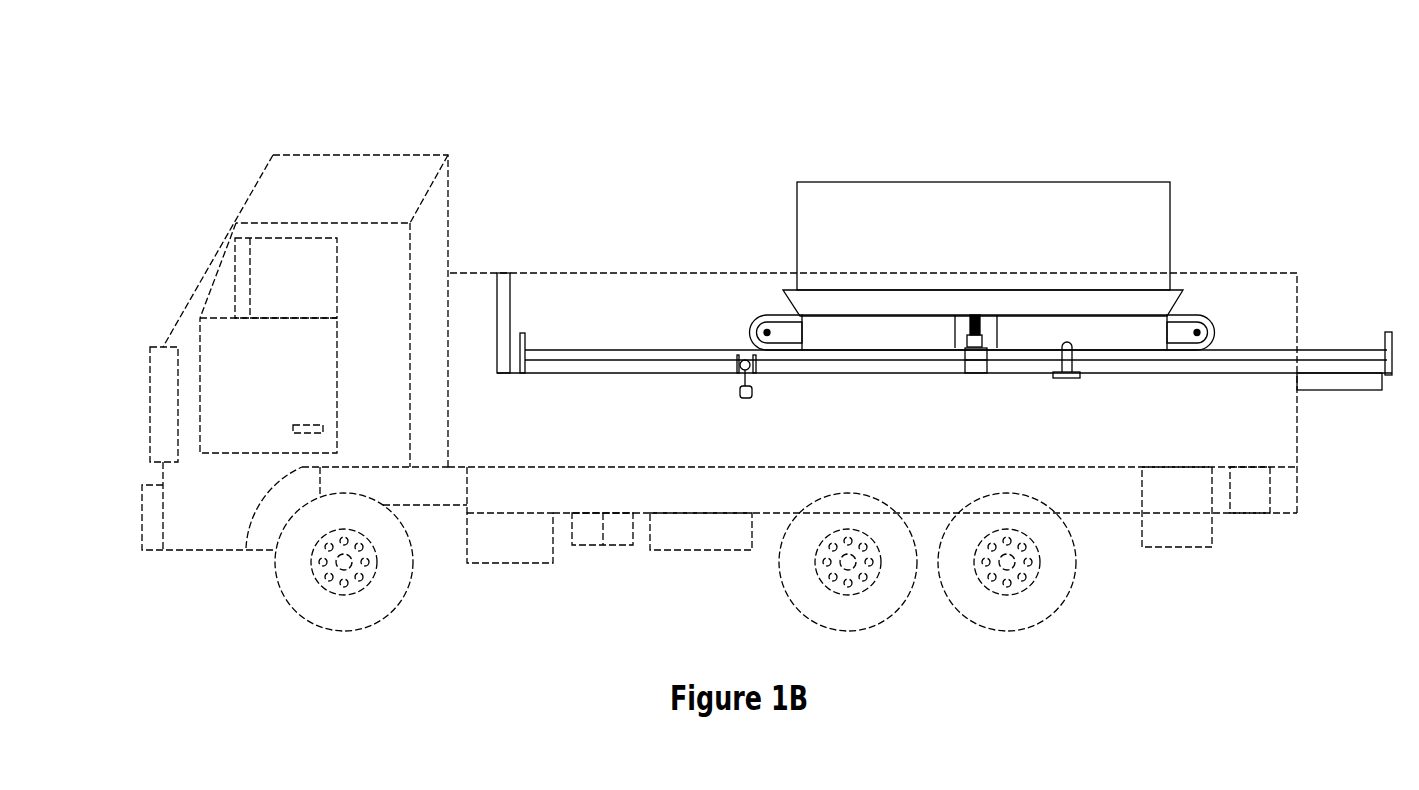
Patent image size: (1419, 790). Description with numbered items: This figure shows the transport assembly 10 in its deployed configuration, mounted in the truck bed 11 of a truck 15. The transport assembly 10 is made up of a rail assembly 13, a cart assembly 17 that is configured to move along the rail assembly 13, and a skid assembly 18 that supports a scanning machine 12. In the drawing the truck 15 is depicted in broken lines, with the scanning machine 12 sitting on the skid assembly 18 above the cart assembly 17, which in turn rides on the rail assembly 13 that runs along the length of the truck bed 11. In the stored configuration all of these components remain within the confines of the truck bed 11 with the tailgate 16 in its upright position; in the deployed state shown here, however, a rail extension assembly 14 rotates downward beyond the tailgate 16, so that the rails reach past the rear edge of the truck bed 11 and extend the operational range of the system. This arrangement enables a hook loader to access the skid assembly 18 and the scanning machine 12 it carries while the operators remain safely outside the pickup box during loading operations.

The transport assembly 10 is at (934, 244).
The truck bed 11 is at (512, 370).
The scanning machine 12 is at (998, 248).
The rail assembly 13 is at (702, 368).
The rail extension assembly 14 is at (1316, 292).
The truck 15 is at (774, 344).
The tailgate 16 is at (1345, 382).
The cart assembly 17 is at (830, 337).
The skid assembly 18 is at (856, 305).